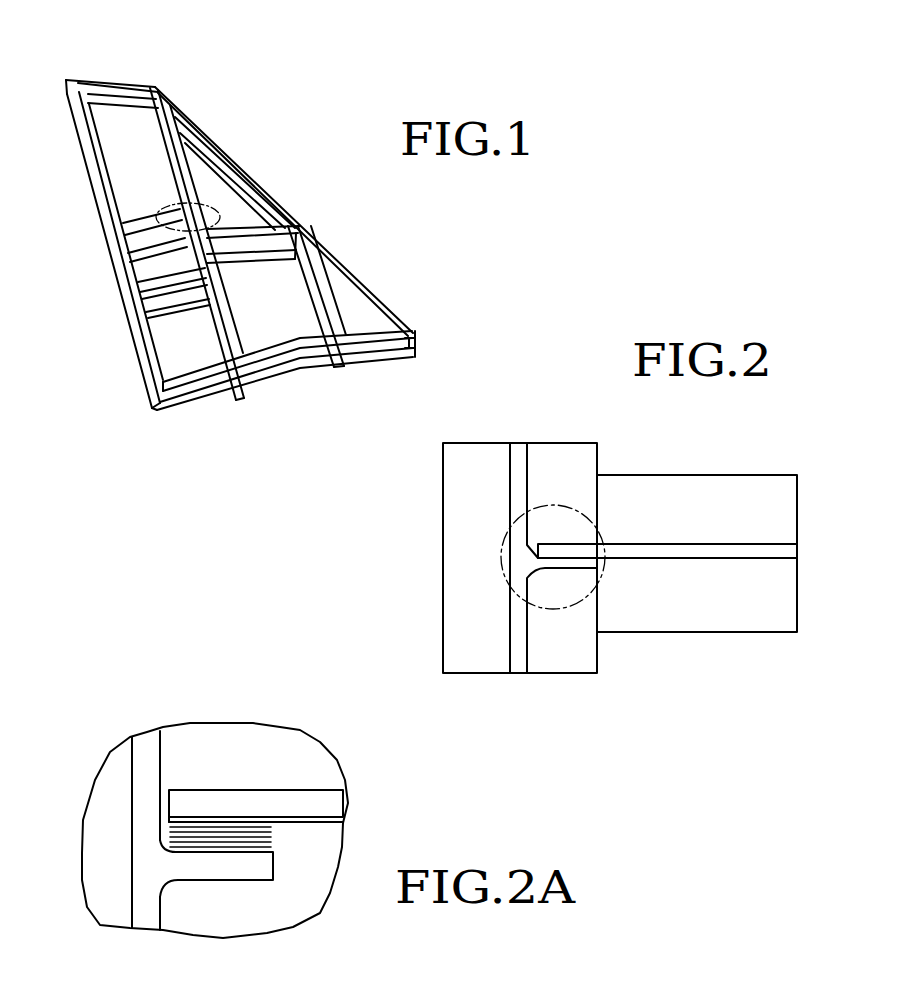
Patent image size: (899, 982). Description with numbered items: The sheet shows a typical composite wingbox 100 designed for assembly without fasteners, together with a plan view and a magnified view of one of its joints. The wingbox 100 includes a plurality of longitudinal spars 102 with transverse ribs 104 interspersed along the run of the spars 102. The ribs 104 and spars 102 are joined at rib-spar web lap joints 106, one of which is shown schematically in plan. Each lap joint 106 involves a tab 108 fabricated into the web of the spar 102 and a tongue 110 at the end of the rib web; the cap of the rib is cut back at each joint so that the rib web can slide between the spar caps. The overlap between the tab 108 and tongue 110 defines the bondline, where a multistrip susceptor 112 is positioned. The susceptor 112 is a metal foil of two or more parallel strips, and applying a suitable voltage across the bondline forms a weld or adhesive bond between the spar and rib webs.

In FIG. 1, the composite wingbox 100 is at (303, 133).
In FIG. 1, the longitudinal spar 102 is at (175, 362).
In FIG. 2, the longitudinal spar 102 is at (475, 676).
In FIG. 1, the transverse rib 104 is at (133, 87).
In FIG. 2, the transverse rib 104 is at (752, 476).
In FIG. 2, the rib-spar web lap joint 106 is at (563, 465).
In FIG. 2A, the tab 108 is at (267, 880).
In FIG. 2A, the tongue 110 is at (240, 790).
In FIG. 2A, the multistrip susceptor 112 is at (273, 843).